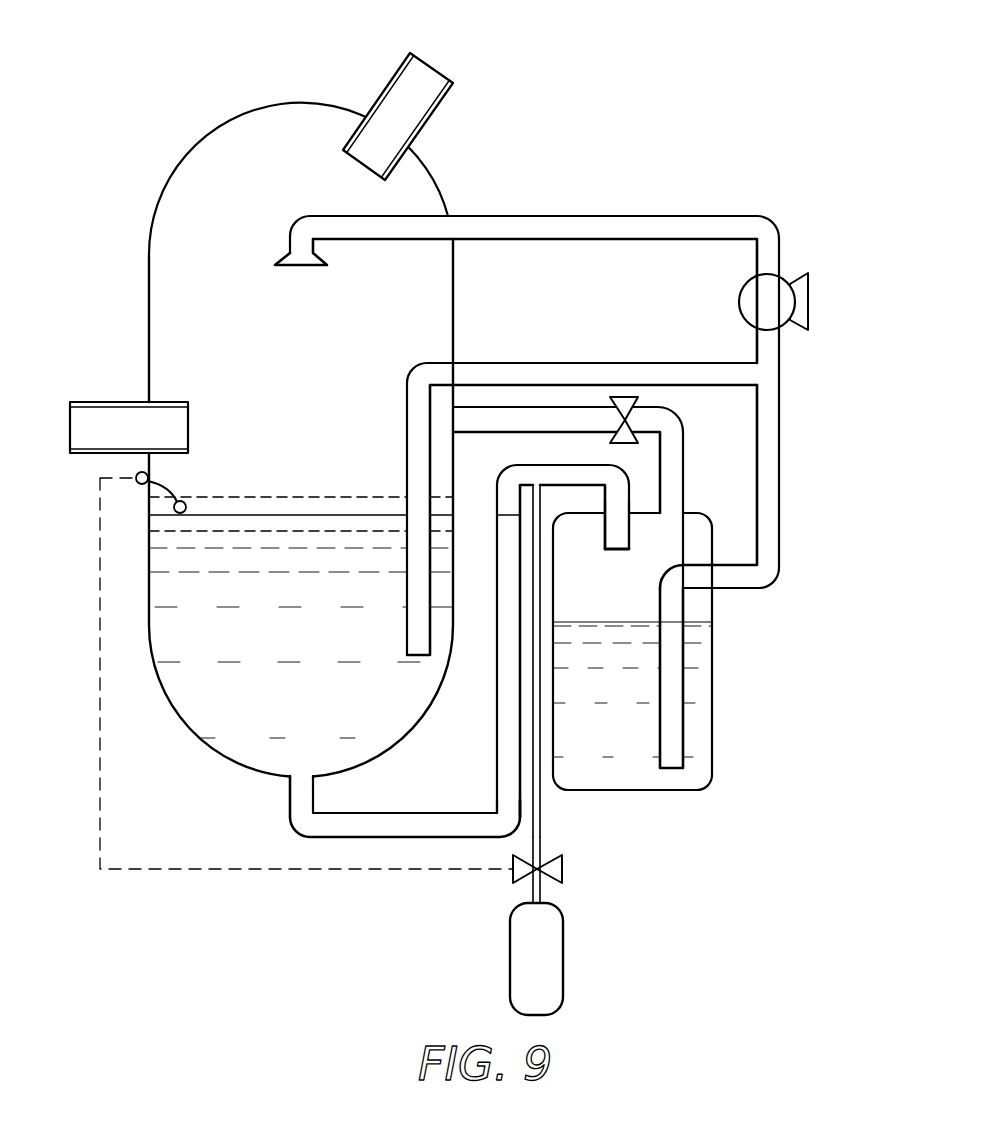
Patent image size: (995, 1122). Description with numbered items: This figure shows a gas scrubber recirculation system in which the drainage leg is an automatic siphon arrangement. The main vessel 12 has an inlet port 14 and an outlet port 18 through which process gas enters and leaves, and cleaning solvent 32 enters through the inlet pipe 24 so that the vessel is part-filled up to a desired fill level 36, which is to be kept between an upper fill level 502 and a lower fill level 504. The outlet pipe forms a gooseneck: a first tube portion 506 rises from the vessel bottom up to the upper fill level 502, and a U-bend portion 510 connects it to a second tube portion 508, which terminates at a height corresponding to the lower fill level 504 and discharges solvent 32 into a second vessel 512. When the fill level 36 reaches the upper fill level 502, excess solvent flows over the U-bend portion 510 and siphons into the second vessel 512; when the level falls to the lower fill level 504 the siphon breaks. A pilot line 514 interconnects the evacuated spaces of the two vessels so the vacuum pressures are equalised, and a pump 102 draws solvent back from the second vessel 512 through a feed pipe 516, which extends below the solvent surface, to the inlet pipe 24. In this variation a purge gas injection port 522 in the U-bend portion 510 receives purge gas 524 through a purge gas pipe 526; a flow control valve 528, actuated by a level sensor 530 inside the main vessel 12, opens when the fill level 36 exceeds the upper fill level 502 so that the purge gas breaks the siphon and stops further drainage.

The vessel 12 is at (149, 222).
The inlet port 14 is at (95, 402).
The outlet port 18 is at (394, 72).
The inlet pipe 24 is at (565, 216).
The solvent 32 is at (313, 701).
The fill level 36 is at (295, 515).
The pump 102 is at (740, 300).
The upper fill level 502 is at (360, 497).
The lower fill level 504 is at (357, 535).
The first tube portion 506 is at (497, 766).
The second tube portion 508 is at (629, 538).
The U-bend portion 510 is at (525, 465).
The second vessel 512 is at (712, 738).
The pilot line 514 is at (687, 451).
The feed pipe 516 is at (407, 400).
The purge gas injection port 522 is at (536, 483).
The purge gas 524 is at (563, 957).
The purge gas pipe 526 is at (540, 817).
The flow control valve 528 is at (562, 868).
The level sensor 530 is at (165, 487).